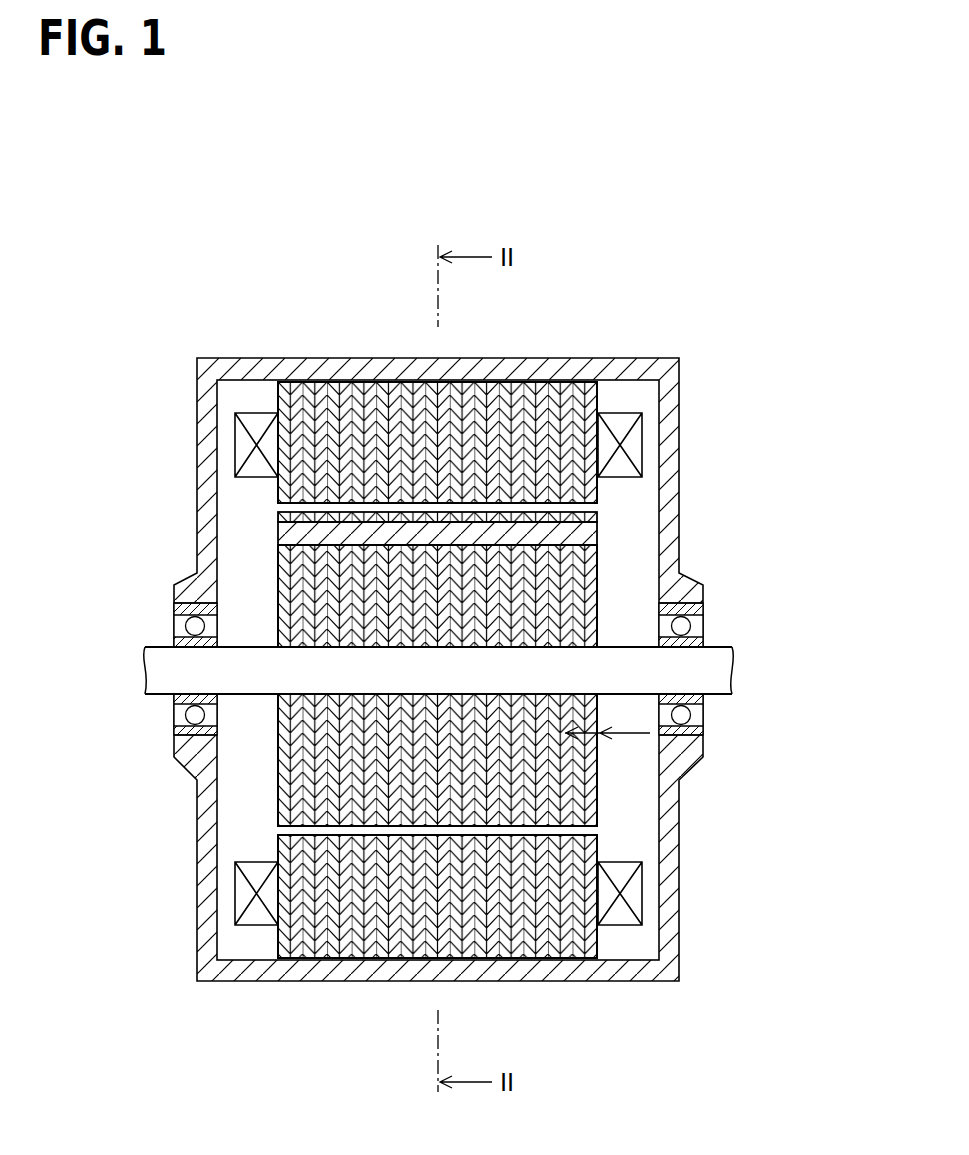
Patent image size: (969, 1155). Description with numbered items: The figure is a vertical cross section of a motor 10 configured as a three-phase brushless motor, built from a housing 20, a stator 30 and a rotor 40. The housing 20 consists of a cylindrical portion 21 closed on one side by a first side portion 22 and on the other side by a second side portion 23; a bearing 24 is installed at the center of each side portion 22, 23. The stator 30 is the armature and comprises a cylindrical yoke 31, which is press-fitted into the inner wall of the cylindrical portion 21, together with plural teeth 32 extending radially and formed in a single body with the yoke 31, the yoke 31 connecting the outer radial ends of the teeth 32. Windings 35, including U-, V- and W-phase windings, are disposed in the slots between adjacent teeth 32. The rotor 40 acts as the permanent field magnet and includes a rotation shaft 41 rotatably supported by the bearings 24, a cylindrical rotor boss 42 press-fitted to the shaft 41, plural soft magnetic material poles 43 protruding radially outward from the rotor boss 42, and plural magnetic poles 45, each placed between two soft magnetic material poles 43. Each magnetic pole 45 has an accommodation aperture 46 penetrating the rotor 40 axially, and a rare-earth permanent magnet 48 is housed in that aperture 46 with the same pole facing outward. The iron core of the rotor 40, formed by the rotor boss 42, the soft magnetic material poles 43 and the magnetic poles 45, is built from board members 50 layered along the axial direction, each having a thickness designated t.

The motor 10 is at (267, 322).
The housing 20 is at (442, 626).
The cylindrical portion 21 is at (622, 368).
The first side portion 22 is at (207, 890).
The second side portion 23 is at (670, 888).
The bearing 24 is at (185, 718).
The stator 30 is at (642, 442).
The yoke 31 is at (285, 396).
The teeth 32 is at (285, 490).
The winding 35 is at (243, 444).
The rotor 40 is at (603, 572).
The rotation shaft 41 is at (723, 677).
The rotor boss 42 is at (283, 703).
The soft magnetic material pole 43 is at (283, 822).
The magnetic pole 45 is at (283, 516).
The accommodation aperture 46 is at (600, 528).
The permanent magnet 48 is at (283, 536).
The board member 50 is at (593, 767).